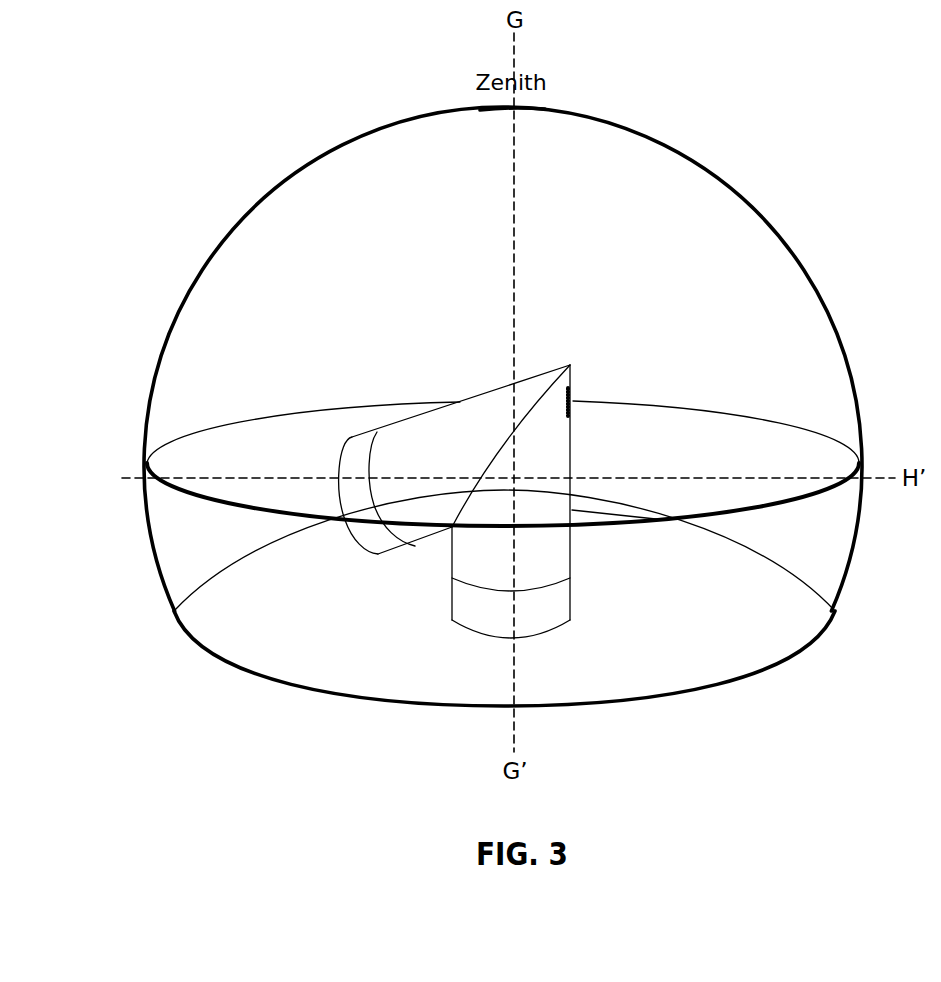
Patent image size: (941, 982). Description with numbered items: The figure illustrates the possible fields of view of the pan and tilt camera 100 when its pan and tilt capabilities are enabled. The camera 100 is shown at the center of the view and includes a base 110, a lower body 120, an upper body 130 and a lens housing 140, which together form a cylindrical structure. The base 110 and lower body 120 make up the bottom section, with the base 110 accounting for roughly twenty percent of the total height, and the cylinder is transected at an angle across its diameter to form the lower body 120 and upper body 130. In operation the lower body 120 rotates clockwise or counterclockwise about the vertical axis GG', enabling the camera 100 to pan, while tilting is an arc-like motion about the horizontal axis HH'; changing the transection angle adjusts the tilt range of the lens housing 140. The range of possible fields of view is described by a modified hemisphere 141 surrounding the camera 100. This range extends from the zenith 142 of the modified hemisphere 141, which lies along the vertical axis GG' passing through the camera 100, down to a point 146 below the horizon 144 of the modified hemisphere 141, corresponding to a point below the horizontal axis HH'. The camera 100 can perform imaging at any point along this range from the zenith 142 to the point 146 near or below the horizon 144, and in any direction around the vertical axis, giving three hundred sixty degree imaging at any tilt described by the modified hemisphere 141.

The pan and tilt camera 100 is at (502, 487).
The base 110 is at (571, 603).
The lower body 120 is at (625, 515).
The upper body 130 is at (430, 513).
The lens housing 140 is at (380, 548).
The modified hemisphere 141 is at (353, 183).
The zenith 142 is at (527, 100).
The horizon 144 is at (254, 410).
The point below the horizon 146 is at (236, 563).